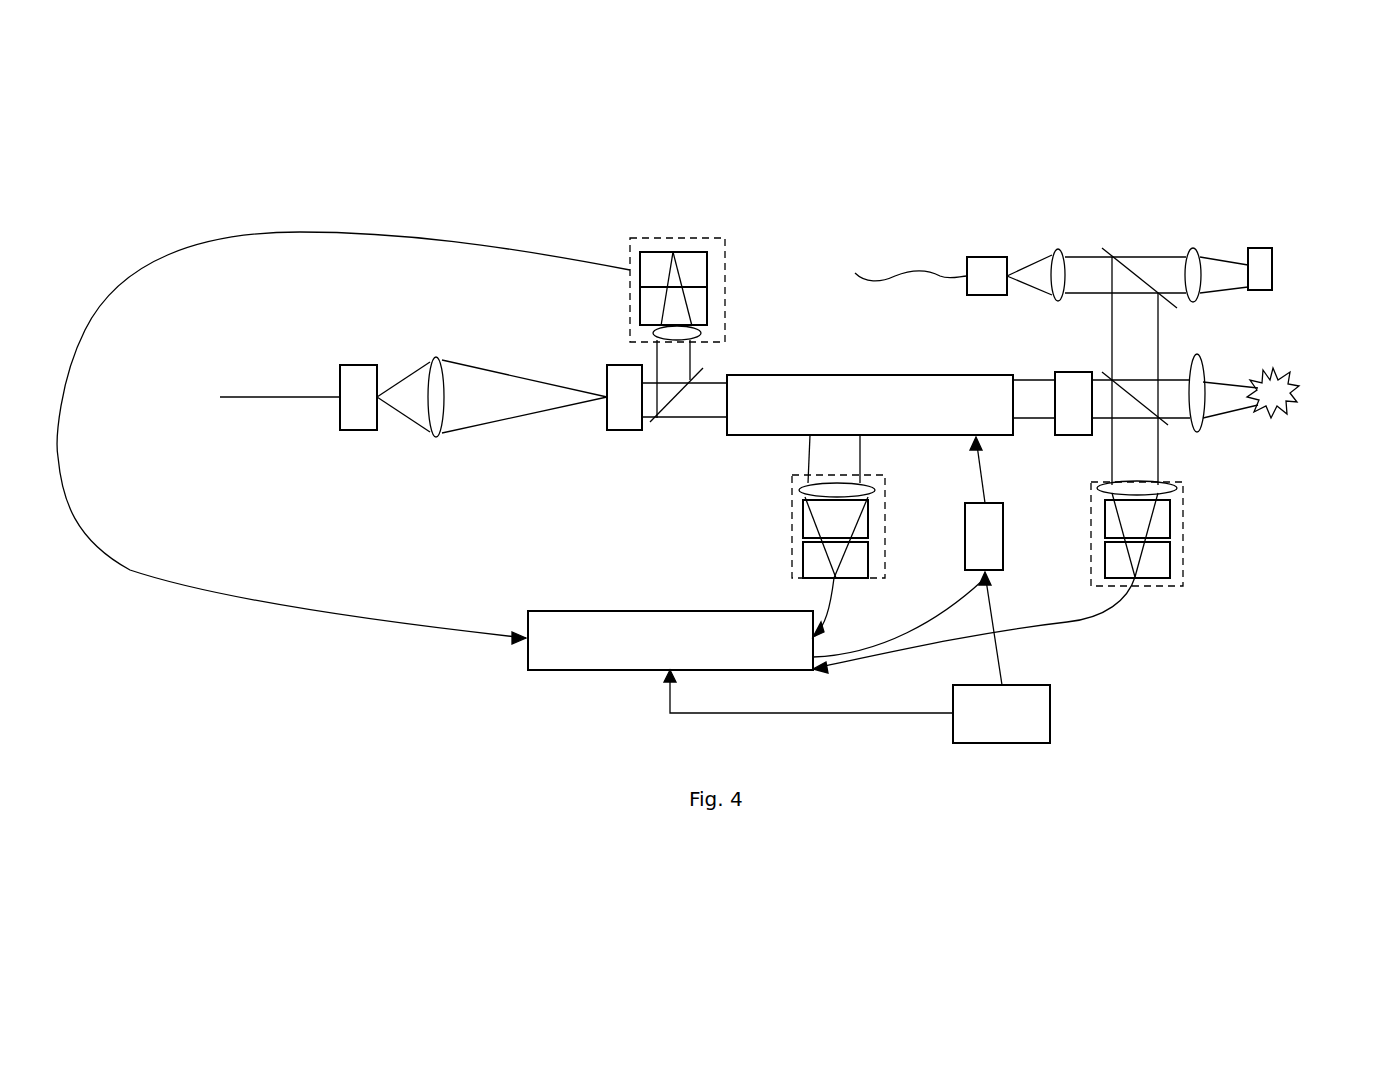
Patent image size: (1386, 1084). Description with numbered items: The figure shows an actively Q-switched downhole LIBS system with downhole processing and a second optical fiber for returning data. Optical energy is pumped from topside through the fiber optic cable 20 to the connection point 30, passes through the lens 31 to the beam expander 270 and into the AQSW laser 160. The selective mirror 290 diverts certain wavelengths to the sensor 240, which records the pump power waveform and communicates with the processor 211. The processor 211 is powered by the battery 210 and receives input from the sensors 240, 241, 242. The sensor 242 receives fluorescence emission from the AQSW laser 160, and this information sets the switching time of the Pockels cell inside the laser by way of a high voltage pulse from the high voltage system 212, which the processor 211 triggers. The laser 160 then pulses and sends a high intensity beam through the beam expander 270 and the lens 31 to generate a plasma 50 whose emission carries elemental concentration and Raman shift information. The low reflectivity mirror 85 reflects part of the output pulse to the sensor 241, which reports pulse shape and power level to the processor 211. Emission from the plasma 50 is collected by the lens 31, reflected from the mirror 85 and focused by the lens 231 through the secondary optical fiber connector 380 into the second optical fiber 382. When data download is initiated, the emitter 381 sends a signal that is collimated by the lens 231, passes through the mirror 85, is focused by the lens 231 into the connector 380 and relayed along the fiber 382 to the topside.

The fiber optic cable 20 is at (239, 370).
The connection point 30 is at (351, 365).
The lens 31 is at (425, 358).
The plasma 50 is at (1290, 385).
The narrow spectrum, low reflectivity mirror 85 is at (1170, 430).
The AQSW laser 160 is at (896, 422).
The battery 210 is at (1010, 744).
The processor 211 is at (659, 617).
The high voltage system 212 is at (1003, 545).
The lens 231 is at (1052, 253).
The sensor 240 is at (630, 290).
The sensor 241 is at (1183, 534).
The sensor 242 is at (778, 524).
The beam expander 270 is at (623, 430).
The selective mirror 290 is at (680, 402).
The secondary optical fiber connector 380 is at (985, 295).
The emitter 381 is at (1283, 269).
The second optical fiber 382 is at (891, 278).